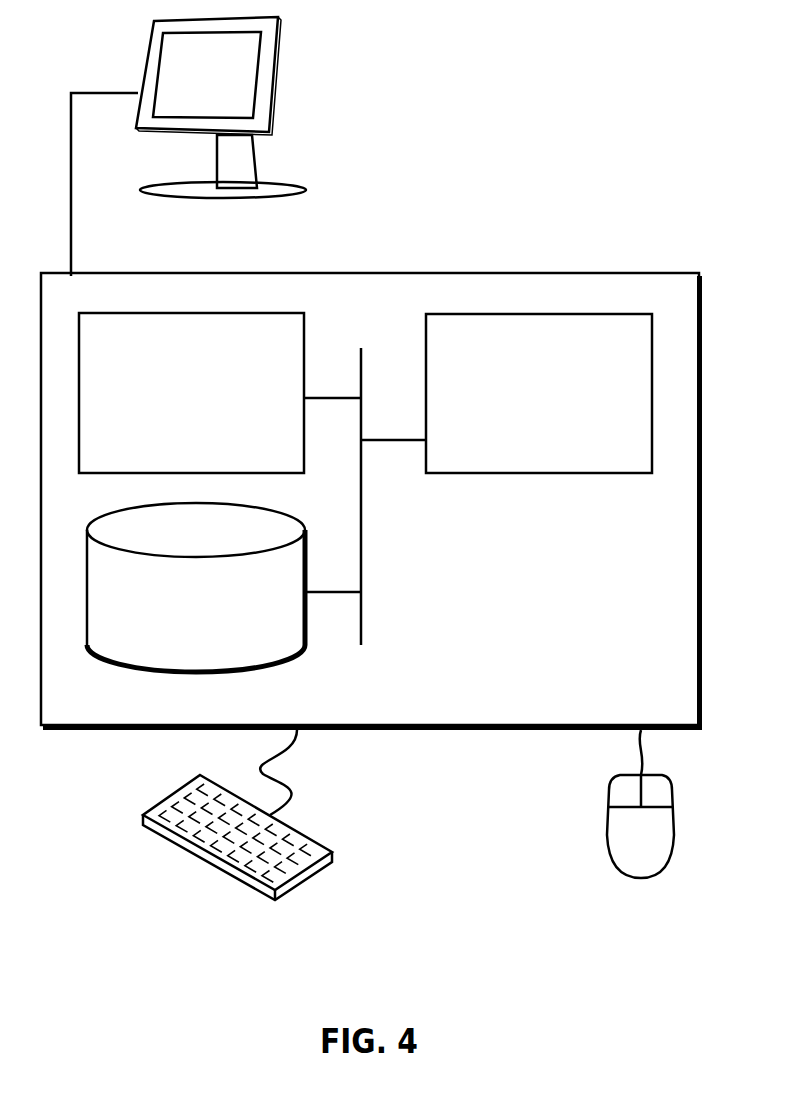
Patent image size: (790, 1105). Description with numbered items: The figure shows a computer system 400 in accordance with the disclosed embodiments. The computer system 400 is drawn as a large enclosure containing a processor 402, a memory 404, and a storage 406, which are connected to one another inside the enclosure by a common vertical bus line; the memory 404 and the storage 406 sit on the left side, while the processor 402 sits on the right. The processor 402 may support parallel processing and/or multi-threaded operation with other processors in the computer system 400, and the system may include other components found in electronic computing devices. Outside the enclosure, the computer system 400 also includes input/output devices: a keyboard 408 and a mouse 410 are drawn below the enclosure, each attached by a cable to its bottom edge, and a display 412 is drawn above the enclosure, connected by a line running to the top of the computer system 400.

The computer system 400 is at (415, 250).
The processor 402 is at (564, 406).
The memory 404 is at (214, 404).
The storage 406 is at (221, 617).
The keyboard 408 is at (163, 837).
The mouse 410 is at (662, 846).
The display 412 is at (221, 122).